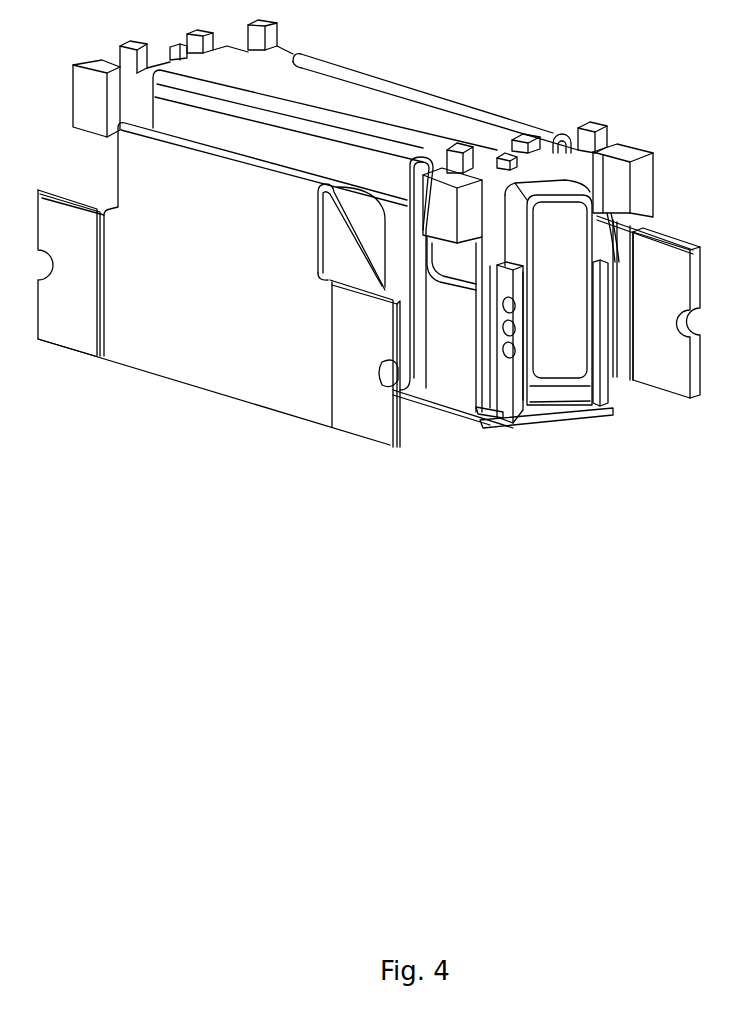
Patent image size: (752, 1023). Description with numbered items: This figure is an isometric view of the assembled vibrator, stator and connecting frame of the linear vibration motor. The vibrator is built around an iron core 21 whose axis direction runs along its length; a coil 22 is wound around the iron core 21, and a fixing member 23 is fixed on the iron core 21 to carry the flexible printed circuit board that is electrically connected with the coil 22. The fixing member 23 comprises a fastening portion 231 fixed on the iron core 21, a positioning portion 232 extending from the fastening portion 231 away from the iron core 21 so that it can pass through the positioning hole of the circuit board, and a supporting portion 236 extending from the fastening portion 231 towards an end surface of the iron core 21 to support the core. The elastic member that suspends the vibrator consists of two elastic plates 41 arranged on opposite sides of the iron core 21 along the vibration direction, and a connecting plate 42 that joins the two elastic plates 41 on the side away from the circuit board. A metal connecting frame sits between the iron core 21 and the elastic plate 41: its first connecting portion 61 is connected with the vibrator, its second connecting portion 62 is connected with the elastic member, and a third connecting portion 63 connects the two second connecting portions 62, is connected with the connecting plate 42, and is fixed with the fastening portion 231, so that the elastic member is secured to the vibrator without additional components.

The iron core 21 is at (565, 248).
The coil 22 is at (315, 97).
The fixing member 23 is at (110, 68).
The fastening portion 231 is at (547, 172).
The positioning portion 232 is at (535, 133).
The supporting portion 236 is at (565, 390).
The elastic plate 41 is at (436, 90).
The connecting plate 42 is at (567, 423).
The first connecting portion 61 is at (497, 333).
The second connecting portion 62 is at (557, 408).
The third connecting portion 63 is at (493, 410).